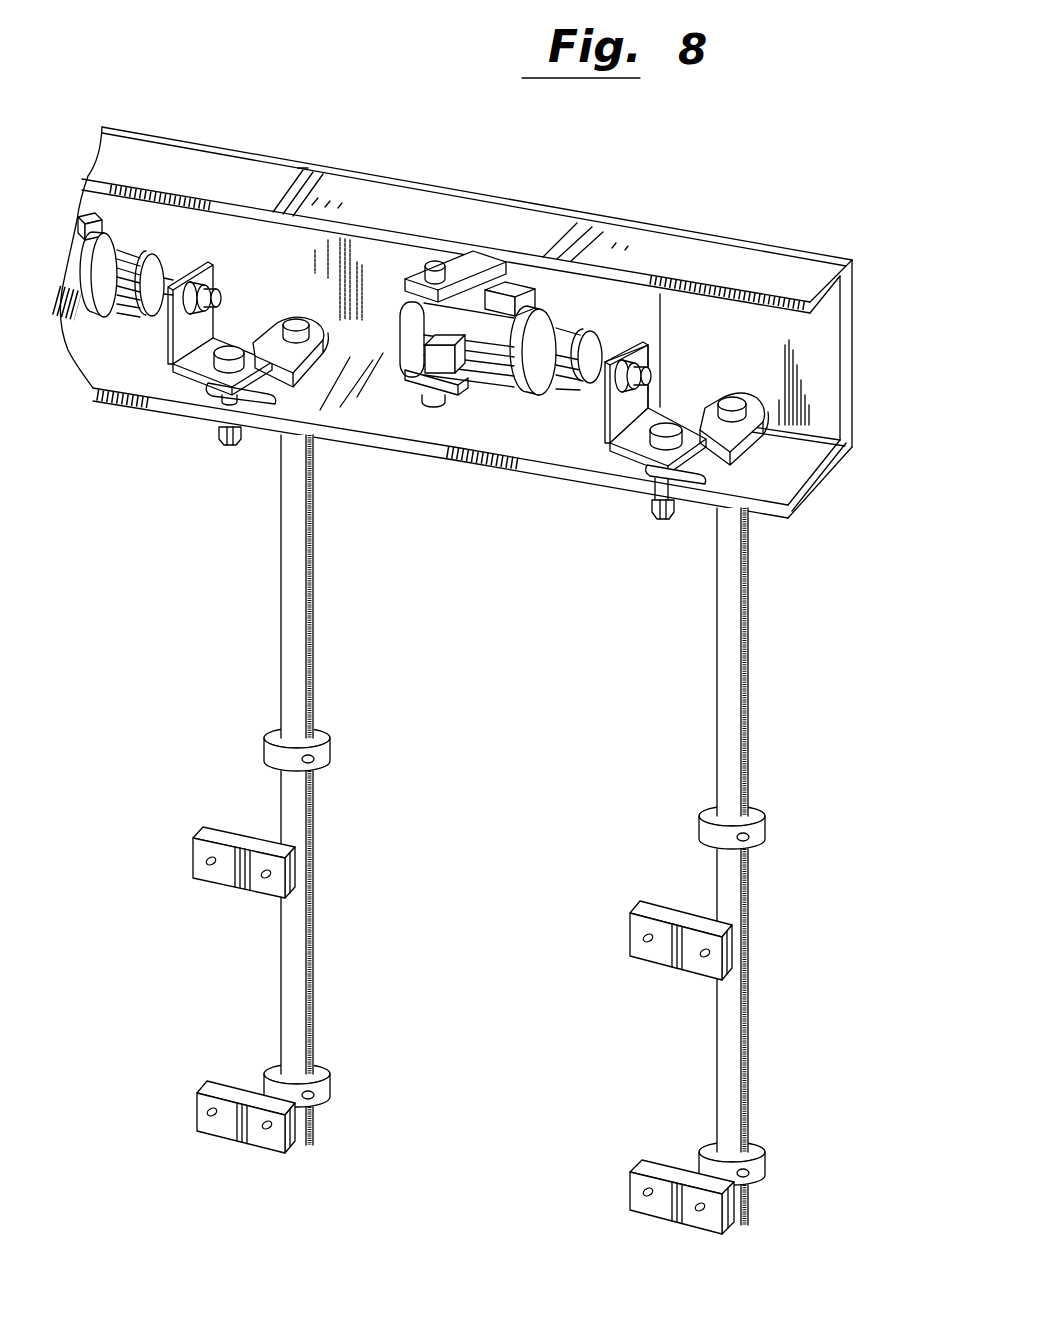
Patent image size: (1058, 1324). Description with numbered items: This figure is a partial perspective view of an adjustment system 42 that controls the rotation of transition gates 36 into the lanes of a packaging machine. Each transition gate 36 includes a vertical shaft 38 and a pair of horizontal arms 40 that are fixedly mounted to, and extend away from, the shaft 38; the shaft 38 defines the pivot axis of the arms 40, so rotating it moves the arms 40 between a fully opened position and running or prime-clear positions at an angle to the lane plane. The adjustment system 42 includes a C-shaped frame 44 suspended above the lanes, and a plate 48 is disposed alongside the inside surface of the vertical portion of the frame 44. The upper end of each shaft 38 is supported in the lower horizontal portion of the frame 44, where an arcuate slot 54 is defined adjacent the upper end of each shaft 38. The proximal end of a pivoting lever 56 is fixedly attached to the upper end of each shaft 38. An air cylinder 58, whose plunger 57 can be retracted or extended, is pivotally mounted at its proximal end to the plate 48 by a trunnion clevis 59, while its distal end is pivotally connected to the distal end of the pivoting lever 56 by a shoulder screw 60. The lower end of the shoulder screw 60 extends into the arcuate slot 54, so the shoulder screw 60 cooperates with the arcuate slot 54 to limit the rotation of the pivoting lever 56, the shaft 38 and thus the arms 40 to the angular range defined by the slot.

The transition gate 36 is at (683, 1061).
The vertical shaft 38 is at (314, 618).
The horizontal arms 40 is at (195, 851).
The adjustment system 42 is at (733, 216).
The C-shaped frame 44 is at (705, 363).
The plate 48 is at (275, 275).
The arcuate slot 54 is at (263, 428).
The pivoting lever 56 is at (293, 373).
The plunger 57 is at (150, 297).
The air cylinder 58 is at (467, 308).
The trunnion clevis 59 is at (437, 260).
The shoulder screw 60 is at (236, 446).